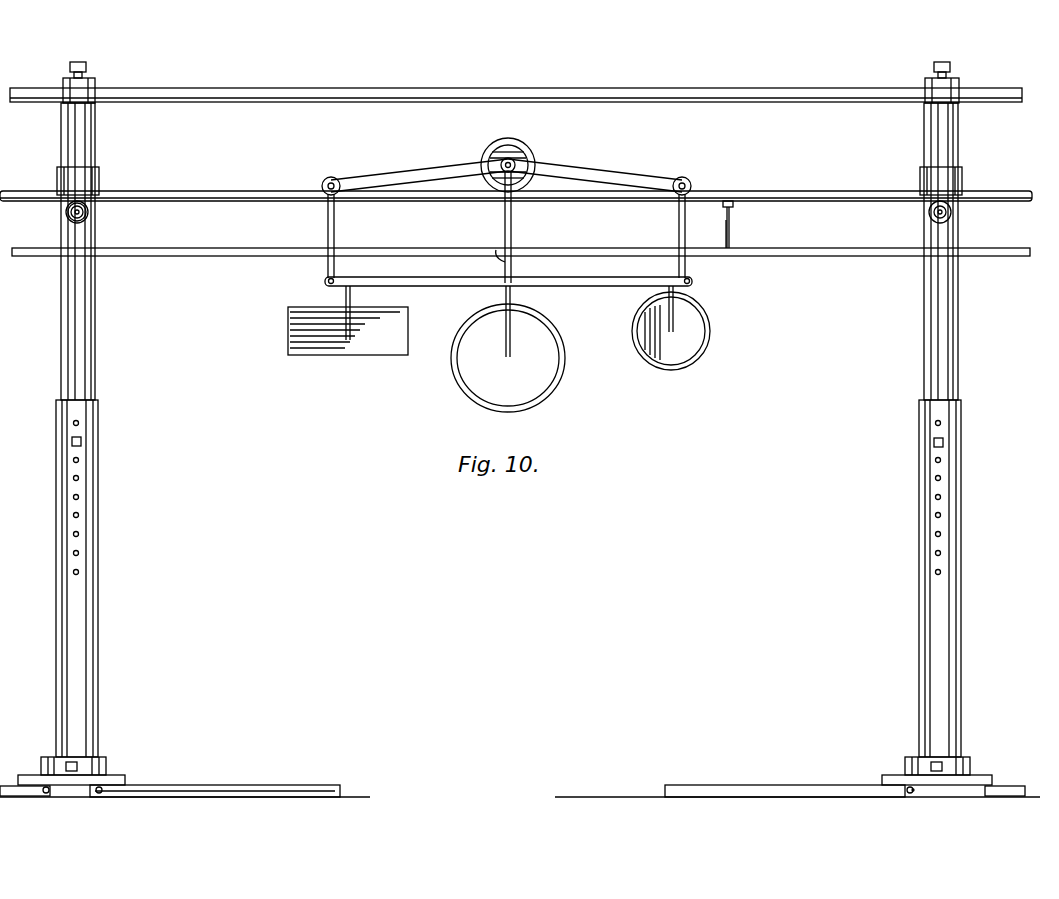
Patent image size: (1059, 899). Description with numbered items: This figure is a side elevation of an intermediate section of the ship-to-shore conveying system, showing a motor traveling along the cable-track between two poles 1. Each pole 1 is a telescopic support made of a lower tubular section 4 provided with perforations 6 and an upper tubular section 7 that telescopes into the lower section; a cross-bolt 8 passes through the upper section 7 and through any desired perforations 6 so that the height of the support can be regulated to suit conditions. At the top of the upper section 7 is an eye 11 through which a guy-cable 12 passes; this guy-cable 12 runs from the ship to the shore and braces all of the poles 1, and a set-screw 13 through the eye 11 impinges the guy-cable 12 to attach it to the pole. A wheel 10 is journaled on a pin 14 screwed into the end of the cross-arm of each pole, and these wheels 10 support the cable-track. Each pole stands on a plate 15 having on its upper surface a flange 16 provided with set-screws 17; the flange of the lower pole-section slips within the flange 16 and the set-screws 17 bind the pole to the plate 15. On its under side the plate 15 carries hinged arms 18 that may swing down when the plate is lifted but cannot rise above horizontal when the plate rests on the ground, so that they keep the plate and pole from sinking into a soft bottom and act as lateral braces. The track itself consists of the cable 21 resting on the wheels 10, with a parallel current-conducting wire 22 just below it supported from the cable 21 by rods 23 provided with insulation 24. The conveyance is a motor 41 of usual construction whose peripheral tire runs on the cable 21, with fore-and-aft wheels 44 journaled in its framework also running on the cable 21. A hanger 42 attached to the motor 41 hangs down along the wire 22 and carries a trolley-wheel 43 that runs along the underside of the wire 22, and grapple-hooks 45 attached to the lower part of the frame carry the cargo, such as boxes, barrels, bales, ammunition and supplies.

The pole 1 is at (100, 404).
The lower tubular section 4 is at (98, 506).
The perforations 6 is at (79, 555).
The upper tubular section 7 is at (96, 348).
The cross-bolt 8 is at (82, 441).
The wheel 10 is at (90, 214).
The eye 11 is at (96, 82).
The guy-cable 12 is at (292, 88).
The set-screw 13 is at (84, 62).
The pin 14 is at (66, 213).
The plate 15 is at (126, 776).
The flange 16 is at (102, 758).
The set-screw 17 is at (66, 764).
The hinged arm 18 is at (264, 786).
The cable 21 is at (838, 182).
The current-conducting wire 22 is at (828, 258).
The rod 23 is at (710, 234).
The insulation 24 is at (735, 206).
The motor 41 is at (536, 146).
The hanger 42 is at (513, 230).
The trolley-wheel 43 is at (500, 260).
The fore-and-aft wheels 44 is at (333, 177).
The grapple-hook 45 is at (344, 300).